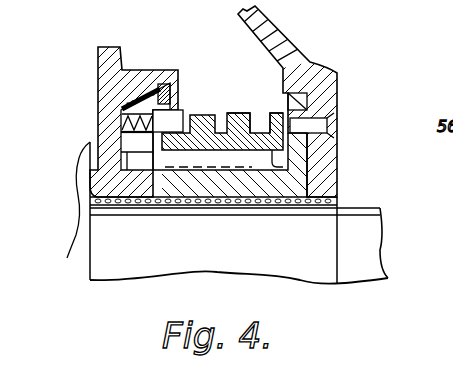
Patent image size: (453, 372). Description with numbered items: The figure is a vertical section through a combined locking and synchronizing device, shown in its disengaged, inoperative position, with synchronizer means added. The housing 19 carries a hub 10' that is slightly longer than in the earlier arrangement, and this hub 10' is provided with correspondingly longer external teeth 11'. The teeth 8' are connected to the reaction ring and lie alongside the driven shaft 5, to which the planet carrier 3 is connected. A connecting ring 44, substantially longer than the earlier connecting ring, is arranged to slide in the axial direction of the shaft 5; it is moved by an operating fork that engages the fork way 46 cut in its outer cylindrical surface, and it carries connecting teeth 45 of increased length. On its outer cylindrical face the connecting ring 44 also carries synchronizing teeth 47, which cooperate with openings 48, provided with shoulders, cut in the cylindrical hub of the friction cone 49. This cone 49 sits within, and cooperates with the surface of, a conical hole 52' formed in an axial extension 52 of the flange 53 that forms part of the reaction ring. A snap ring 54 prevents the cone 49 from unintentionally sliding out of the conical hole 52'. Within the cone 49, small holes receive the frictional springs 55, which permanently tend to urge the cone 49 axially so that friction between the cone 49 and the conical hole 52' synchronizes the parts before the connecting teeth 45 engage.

The flange 53 is at (106, 49).
The axial extension 52 is at (163, 75).
The conical hole 52' is at (143, 72).
The snap ring 54 is at (178, 78).
The frictional springs 55 is at (101, 122).
The friction cone 49 is at (181, 93).
The openings 48 is at (226, 99).
The synchronizing teeth 47 is at (236, 112).
The connecting ring 44 is at (242, 116).
The fork way 46 is at (261, 121).
The connecting teeth 45 is at (272, 160).
The housing 19 is at (311, 73).
The hub 10' is at (236, 165).
The teeth 8' is at (213, 205).
The external teeth 11' is at (158, 200).
The planet carrier 3 is at (78, 164).
The driven shaft 5 is at (363, 245).